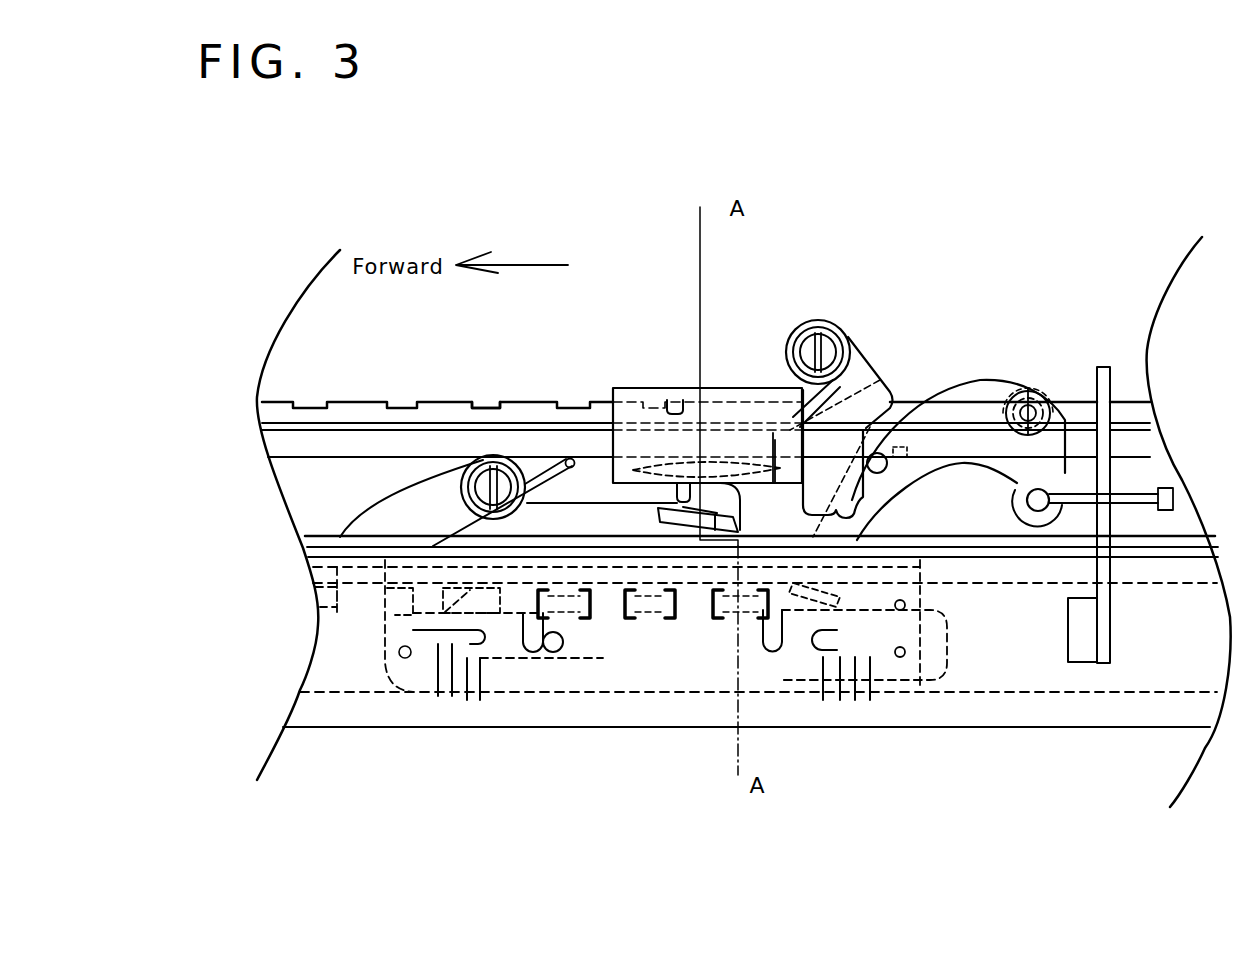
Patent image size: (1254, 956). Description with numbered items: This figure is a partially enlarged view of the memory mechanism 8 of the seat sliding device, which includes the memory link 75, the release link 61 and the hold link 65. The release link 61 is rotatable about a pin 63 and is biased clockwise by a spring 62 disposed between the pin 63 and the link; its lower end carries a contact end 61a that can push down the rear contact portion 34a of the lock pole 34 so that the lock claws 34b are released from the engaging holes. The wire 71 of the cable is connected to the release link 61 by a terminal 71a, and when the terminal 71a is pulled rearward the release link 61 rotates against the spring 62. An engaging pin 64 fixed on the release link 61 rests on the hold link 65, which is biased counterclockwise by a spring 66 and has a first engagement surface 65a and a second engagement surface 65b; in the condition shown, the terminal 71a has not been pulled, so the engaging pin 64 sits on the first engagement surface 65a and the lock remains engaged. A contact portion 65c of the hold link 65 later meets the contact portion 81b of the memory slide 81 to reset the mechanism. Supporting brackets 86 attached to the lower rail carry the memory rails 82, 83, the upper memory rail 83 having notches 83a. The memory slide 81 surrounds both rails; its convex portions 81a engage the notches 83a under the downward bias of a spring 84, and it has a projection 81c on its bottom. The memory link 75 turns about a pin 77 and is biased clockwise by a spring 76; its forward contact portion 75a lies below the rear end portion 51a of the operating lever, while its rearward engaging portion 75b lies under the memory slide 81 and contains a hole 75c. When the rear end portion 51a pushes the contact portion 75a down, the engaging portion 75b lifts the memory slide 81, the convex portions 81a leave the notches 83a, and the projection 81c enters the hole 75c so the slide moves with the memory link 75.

The memory mechanism 8 is at (678, 266).
The lock pole 34 is at (658, 637).
The contact portion 34a is at (423, 625).
The lock claws 34b is at (540, 608).
The rear end portion 51a is at (313, 572).
The release link 61 is at (940, 405).
The contact end 61a is at (800, 590).
The spring 62 is at (1008, 395).
The pin 63 is at (1022, 405).
The engaging pin 64 is at (880, 455).
The hold link 65 is at (887, 390).
The first engagement surface 65a is at (905, 440).
The second engagement surface 65b is at (812, 538).
The contact portion 65c is at (773, 440).
The spring 66 is at (803, 333).
The wire 71 is at (1127, 493).
The terminal 71a is at (1050, 492).
The memory link 75 is at (425, 503).
The contact portion 75a is at (345, 620).
The engaging portion 75b is at (680, 517).
The hole 75c is at (660, 545).
The spring 76 is at (457, 455).
The pin 77 is at (510, 462).
The memory slide 81 is at (672, 430).
The convex portions 81a is at (683, 400).
The contact portion 81b is at (800, 443).
The projection 81c is at (677, 480).
The memory rail 82 is at (405, 450).
The memory rail 83 is at (355, 415).
The notches 83a is at (490, 402).
The spring 84 is at (600, 427).
The supporting brackets 86 is at (1107, 610).